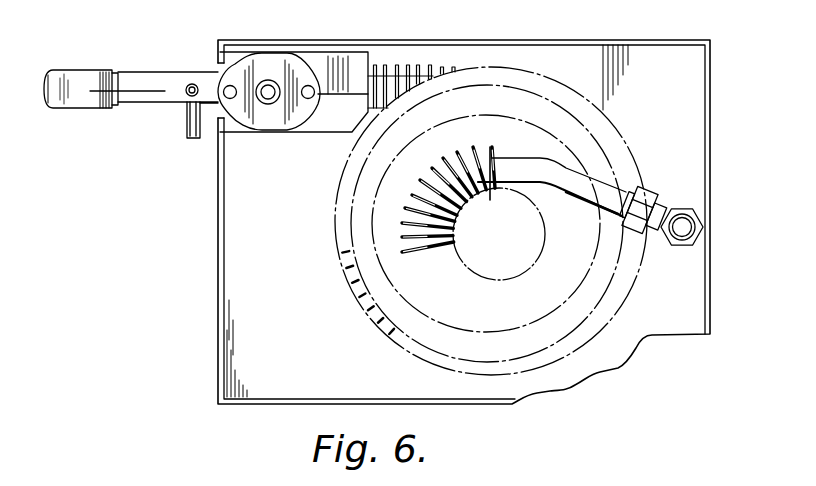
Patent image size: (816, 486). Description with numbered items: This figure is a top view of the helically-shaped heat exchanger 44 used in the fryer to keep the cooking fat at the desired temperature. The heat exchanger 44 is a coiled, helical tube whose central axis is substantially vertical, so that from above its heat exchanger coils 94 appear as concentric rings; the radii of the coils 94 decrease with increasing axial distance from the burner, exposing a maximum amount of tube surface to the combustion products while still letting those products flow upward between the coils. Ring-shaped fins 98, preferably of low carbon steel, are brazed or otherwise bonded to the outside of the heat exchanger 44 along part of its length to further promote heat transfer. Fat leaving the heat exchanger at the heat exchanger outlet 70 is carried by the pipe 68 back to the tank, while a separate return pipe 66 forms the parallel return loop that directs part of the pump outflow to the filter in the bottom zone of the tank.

The heat exchanger 44 is at (330, 213).
The return pipe 66 is at (187, 127).
The pipe 68 is at (682, 247).
The heat exchanger outlet 70 is at (607, 183).
The heat exchanger coils 94 is at (420, 188).
The ring-shaped fins 98 is at (413, 236).